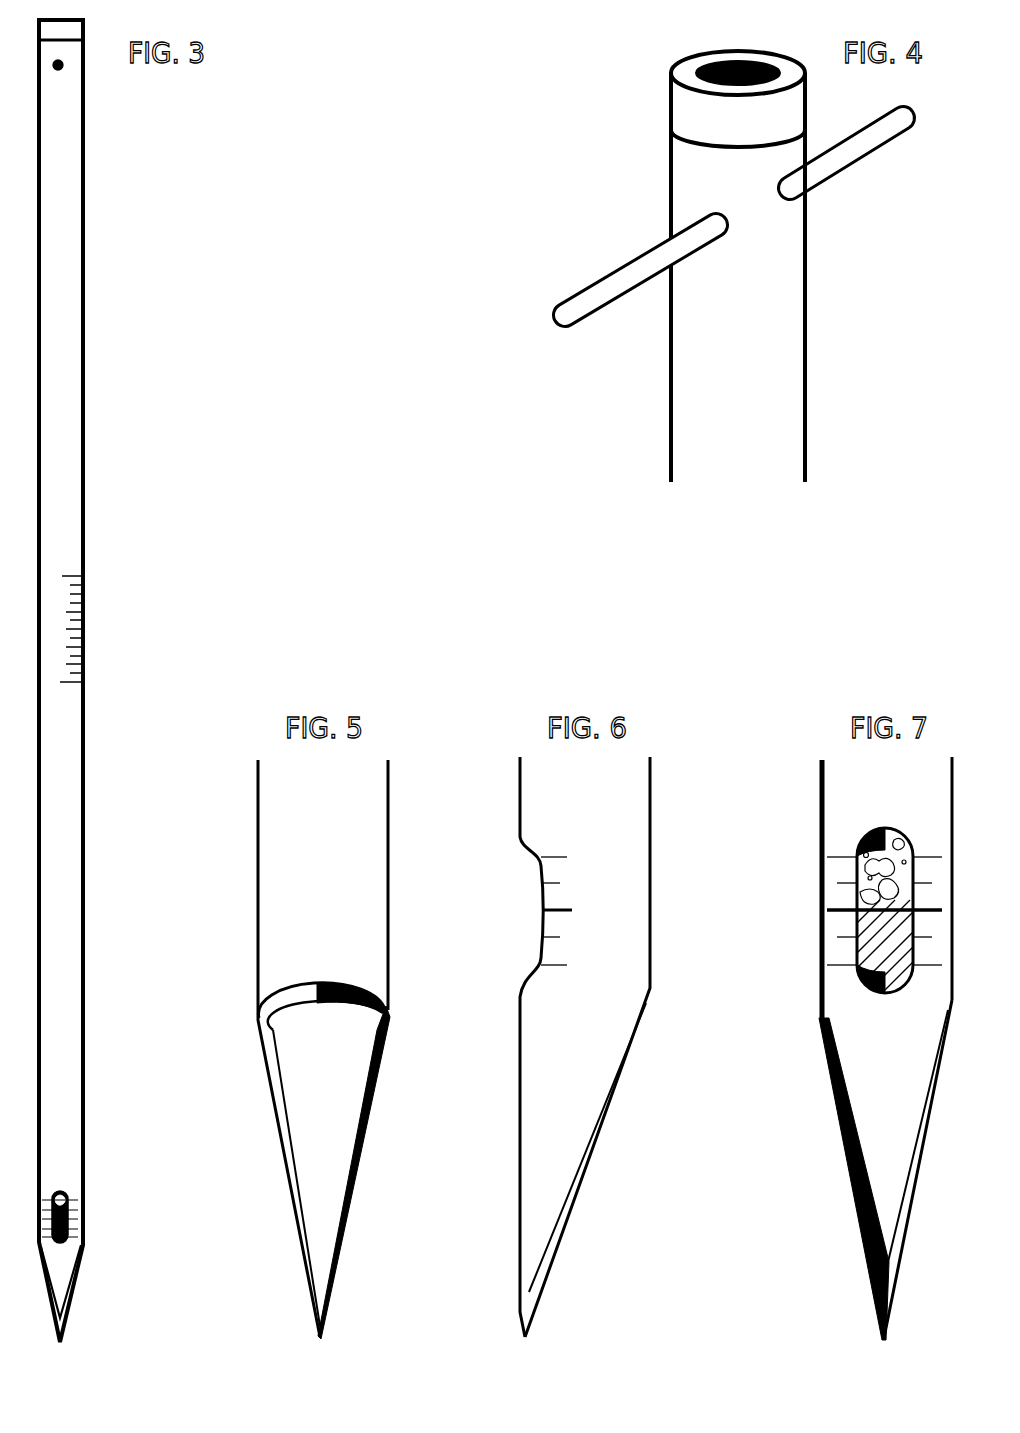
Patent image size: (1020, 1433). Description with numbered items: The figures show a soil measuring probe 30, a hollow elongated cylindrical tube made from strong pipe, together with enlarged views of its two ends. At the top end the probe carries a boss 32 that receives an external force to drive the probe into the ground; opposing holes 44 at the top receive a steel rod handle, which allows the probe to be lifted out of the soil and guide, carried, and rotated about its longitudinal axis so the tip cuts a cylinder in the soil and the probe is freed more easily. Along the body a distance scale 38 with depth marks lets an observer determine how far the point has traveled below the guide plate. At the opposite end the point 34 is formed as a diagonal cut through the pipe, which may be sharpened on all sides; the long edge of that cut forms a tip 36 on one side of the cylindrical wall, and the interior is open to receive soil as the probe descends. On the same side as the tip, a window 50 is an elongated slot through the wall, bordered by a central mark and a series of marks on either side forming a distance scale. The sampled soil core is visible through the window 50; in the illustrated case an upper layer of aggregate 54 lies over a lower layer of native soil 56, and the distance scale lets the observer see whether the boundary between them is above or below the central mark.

In FIG. 3, the probe 30 is at (105, 388).
In FIG. 4, the probe 30 is at (835, 381).
In FIG. 4, the boss 32 is at (690, 113).
In FIG. 3, the point 34 is at (112, 1260).
In FIG. 5, the point 34 is at (292, 1049).
In FIG. 6, the point 34 is at (535, 1047).
In FIG. 7, the point 34 is at (840, 1048).
In FIG. 5, the tip 36 is at (332, 1281).
In FIG. 6, the tip 36 is at (537, 1285).
In FIG. 7, the tip 36 is at (865, 1245).
In FIG. 3, the distance scale 38 is at (75, 650).
In FIG. 3, the holes 44 is at (63, 70).
In FIG. 3, the window 50 is at (70, 1210).
In FIG. 6, the window 50 is at (535, 908).
In FIG. 7, the window 50 is at (853, 901).
In FIG. 7, the aggregate 54 is at (877, 885).
In FIG. 7, the native soil 56 is at (882, 940).